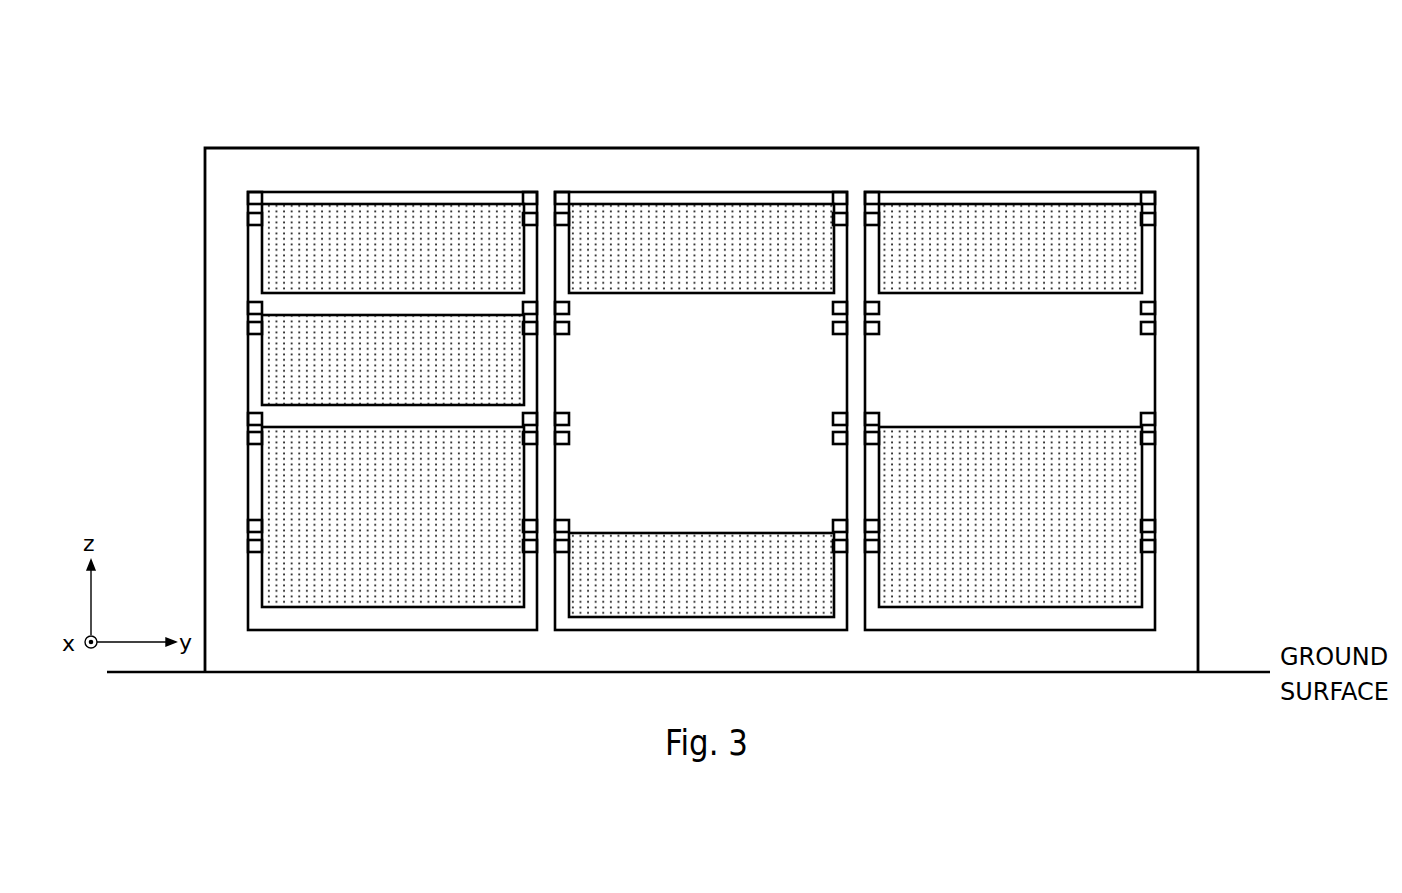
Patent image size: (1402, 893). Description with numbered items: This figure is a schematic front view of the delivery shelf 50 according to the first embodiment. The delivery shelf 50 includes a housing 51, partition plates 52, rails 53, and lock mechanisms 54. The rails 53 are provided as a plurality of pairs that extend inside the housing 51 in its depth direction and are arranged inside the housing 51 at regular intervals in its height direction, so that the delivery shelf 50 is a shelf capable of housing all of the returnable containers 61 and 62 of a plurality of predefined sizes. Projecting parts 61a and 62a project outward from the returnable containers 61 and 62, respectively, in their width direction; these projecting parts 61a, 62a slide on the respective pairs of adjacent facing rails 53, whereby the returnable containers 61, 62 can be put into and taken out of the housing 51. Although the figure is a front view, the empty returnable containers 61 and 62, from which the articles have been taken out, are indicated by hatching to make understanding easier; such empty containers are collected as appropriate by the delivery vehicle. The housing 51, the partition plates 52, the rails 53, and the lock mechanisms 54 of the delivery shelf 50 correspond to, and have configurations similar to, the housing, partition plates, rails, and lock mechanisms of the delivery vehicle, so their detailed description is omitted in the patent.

The delivery shelf 50 is at (1193, 124).
The housing 51 is at (298, 160).
The partition plate 52 is at (548, 192).
The rail 53 is at (1157, 222).
The lock mechanism 54 is at (1157, 200).
The returnable container 61 is at (272, 255).
The projecting part 61a is at (255, 212).
The returnable container 62 is at (272, 483).
The projecting part 62a is at (255, 430).